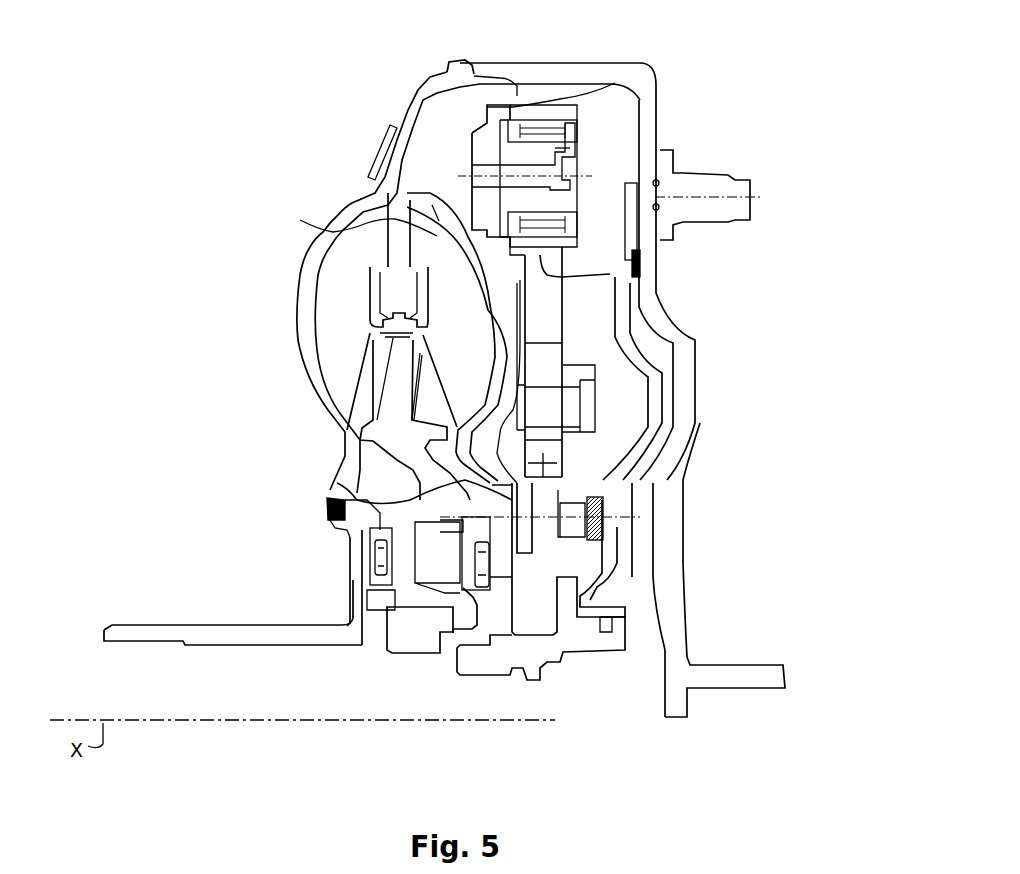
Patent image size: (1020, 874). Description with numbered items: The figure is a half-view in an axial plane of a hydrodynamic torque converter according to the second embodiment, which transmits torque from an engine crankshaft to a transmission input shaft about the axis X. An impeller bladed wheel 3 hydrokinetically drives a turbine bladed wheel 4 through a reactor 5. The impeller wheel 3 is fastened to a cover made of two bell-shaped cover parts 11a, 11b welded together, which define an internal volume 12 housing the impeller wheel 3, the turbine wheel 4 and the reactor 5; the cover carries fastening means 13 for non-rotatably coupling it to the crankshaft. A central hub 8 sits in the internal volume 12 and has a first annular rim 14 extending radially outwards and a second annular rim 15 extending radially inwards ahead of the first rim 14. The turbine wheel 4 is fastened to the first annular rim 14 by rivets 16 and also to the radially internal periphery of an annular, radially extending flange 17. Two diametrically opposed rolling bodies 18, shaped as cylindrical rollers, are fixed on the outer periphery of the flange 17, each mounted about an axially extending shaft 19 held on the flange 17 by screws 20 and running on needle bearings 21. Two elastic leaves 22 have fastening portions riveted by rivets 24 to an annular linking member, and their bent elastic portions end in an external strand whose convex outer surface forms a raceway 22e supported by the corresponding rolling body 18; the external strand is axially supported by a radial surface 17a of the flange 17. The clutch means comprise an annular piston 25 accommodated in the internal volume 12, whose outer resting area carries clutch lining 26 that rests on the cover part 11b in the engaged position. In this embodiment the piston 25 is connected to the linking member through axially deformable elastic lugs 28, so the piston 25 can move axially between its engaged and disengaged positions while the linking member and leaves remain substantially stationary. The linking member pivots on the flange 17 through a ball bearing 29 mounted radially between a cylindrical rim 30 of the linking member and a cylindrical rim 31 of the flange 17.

The impeller bladed wheel 3 is at (340, 341).
The turbine bladed wheel 4 is at (337, 233).
The reactor 5 is at (407, 380).
The central hub 8 is at (547, 657).
The cover part 11a is at (413, 103).
The cover part 11b is at (558, 65).
The internal volume 12 is at (643, 77).
The fastening means 13 is at (713, 187).
The first annular rim 14 is at (502, 605).
The second annular rim 15 is at (570, 597).
The rivets 16 is at (477, 538).
The flange 17 is at (517, 327).
The radial surface 17a is at (523, 278).
The rolling bodies 18 is at (536, 118).
The shafts 19 is at (555, 148).
The screws 20 is at (555, 173).
The needle bearings 21 is at (637, 105).
The elastic leaves 22 is at (540, 363).
The raceway 22e is at (610, 274).
The rivets 24 is at (590, 407).
The annular piston 25 is at (620, 327).
The clutch lining 26 is at (640, 257).
The elastic lugs 28 is at (607, 530).
The ball bearing 29 is at (553, 470).
The cylindrical rim 30 is at (553, 443).
The cylindrical rim 31 is at (337, 483).